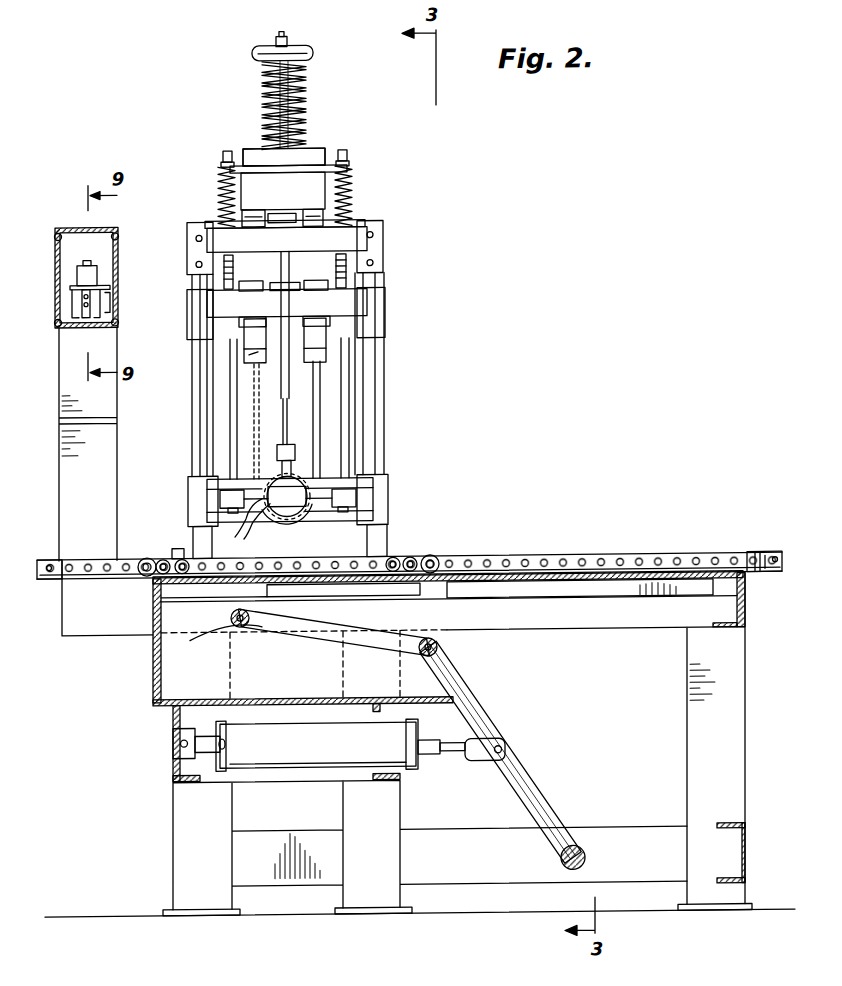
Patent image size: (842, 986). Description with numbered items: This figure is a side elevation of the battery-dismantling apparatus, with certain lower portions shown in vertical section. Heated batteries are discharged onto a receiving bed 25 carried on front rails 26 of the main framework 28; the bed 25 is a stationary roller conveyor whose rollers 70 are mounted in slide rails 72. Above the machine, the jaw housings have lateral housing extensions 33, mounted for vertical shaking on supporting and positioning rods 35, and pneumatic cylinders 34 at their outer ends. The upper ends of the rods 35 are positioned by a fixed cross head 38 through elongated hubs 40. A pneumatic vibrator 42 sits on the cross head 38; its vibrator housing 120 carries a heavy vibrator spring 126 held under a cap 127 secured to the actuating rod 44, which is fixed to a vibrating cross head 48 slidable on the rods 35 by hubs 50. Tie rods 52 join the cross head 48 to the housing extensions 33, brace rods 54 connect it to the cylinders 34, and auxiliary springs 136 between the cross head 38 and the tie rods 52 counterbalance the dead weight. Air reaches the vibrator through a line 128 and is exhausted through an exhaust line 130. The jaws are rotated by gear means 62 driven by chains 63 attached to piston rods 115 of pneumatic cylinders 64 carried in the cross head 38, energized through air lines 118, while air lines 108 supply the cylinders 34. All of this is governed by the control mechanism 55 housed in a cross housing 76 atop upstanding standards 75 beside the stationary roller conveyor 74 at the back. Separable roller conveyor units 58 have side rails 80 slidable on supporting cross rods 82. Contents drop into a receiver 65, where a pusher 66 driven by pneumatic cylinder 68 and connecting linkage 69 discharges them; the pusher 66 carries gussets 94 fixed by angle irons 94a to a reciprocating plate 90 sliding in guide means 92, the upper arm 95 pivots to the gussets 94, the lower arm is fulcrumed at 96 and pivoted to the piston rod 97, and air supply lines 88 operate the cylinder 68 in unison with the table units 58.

The receiving bed 25 is at (778, 547).
The front rails 26 is at (745, 608).
The main framework 28 is at (57, 628).
The housing extensions 33 is at (388, 485).
The pneumatic cylinders 34 is at (280, 520).
The supporting and positioning rods 35 is at (384, 380).
The cross head 38 is at (362, 228).
The elongated hubs 40 is at (384, 230).
The pneumatic vibrator 42 is at (308, 122).
The actuating rod 44 is at (284, 38).
The vibrating cross head 48 is at (365, 303).
The hubs 50 is at (386, 322).
The tie rods 52 is at (343, 152).
The brace rods 54 is at (283, 418).
The control mechanism 55 is at (74, 265).
The separable roller conveyor units 58 is at (182, 556).
The gear means 62 is at (300, 520).
The chains 63 is at (254, 392).
The pneumatic cylinders 64 is at (256, 216).
The receiver 65 is at (288, 700).
The pusher 66 is at (150, 650).
The pneumatic cylinder 68 is at (282, 755).
The connecting linkage 69 is at (470, 722).
The rollers 70 is at (523, 556).
The slide rails 72 is at (600, 574).
The stationary roller conveyor 74 is at (50, 559).
The upstanding standards 75 is at (59, 430).
The cross housing 76 is at (56, 228).
The side rails 80 is at (393, 558).
The supporting cross rods 82 is at (147, 558).
The air supply lines 88 is at (222, 744).
The reciprocating plate 90 is at (322, 598).
The guide means 92 is at (470, 600).
The gussets 94 is at (240, 647).
The angle irons 94a is at (360, 598).
The upper arm 95 is at (360, 656).
The fulcrum 96 is at (585, 860).
The piston rod 97 is at (440, 760).
The air lines 108 is at (247, 527).
The piston rods 115 is at (292, 384).
The air lines 118 is at (326, 352).
The vibrator housing 120 is at (248, 156).
The vibrator spring 126 is at (306, 78).
The cap 127 is at (305, 50).
The air line 128 is at (218, 185).
The exhaust line 130 is at (350, 165).
The auxiliary springs 136 is at (352, 190).